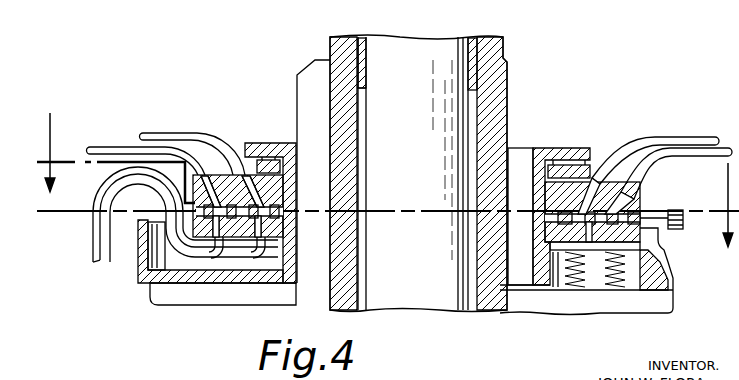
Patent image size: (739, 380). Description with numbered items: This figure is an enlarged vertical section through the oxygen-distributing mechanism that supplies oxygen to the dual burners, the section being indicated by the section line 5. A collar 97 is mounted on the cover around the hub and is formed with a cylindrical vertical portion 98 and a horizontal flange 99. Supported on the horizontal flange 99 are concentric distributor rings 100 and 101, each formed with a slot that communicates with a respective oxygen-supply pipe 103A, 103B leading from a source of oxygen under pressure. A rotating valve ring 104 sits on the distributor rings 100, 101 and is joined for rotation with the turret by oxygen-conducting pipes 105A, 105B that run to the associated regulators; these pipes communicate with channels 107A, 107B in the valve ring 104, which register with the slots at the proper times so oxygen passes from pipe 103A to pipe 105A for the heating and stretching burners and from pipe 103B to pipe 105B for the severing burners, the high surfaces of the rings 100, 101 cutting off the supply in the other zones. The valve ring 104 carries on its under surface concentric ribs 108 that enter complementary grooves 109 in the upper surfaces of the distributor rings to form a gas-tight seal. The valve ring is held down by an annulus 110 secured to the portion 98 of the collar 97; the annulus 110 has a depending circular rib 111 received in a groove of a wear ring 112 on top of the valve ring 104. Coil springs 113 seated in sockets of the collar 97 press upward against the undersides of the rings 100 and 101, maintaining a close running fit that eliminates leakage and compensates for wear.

The section line 5- 5 is at (375, 180).
The collar 97 is at (532, 290).
The cylindrical vertical portion 98 is at (291, 162).
The horizontal flange 99 is at (592, 252).
The distributor ring 100 is at (203, 232).
The distributor ring 101 is at (276, 243).
The oxygen-supply pipe 103A is at (108, 248).
The oxygen-supply pipe 103B is at (93, 222).
The rotating valve ring 104 is at (640, 172).
The oxygen-conducting pipe 105A is at (100, 147).
The oxygen-conducting pipe 105B is at (193, 136).
The channel 107A is at (288, 198).
The channel 107B is at (288, 181).
The concentric ribs 108 is at (270, 217).
The grooves 109 is at (237, 249).
The annulus 110 is at (558, 150).
The depending circular rib 111 is at (588, 163).
The wear ring 112 is at (602, 168).
The coil springs 113 is at (586, 297).